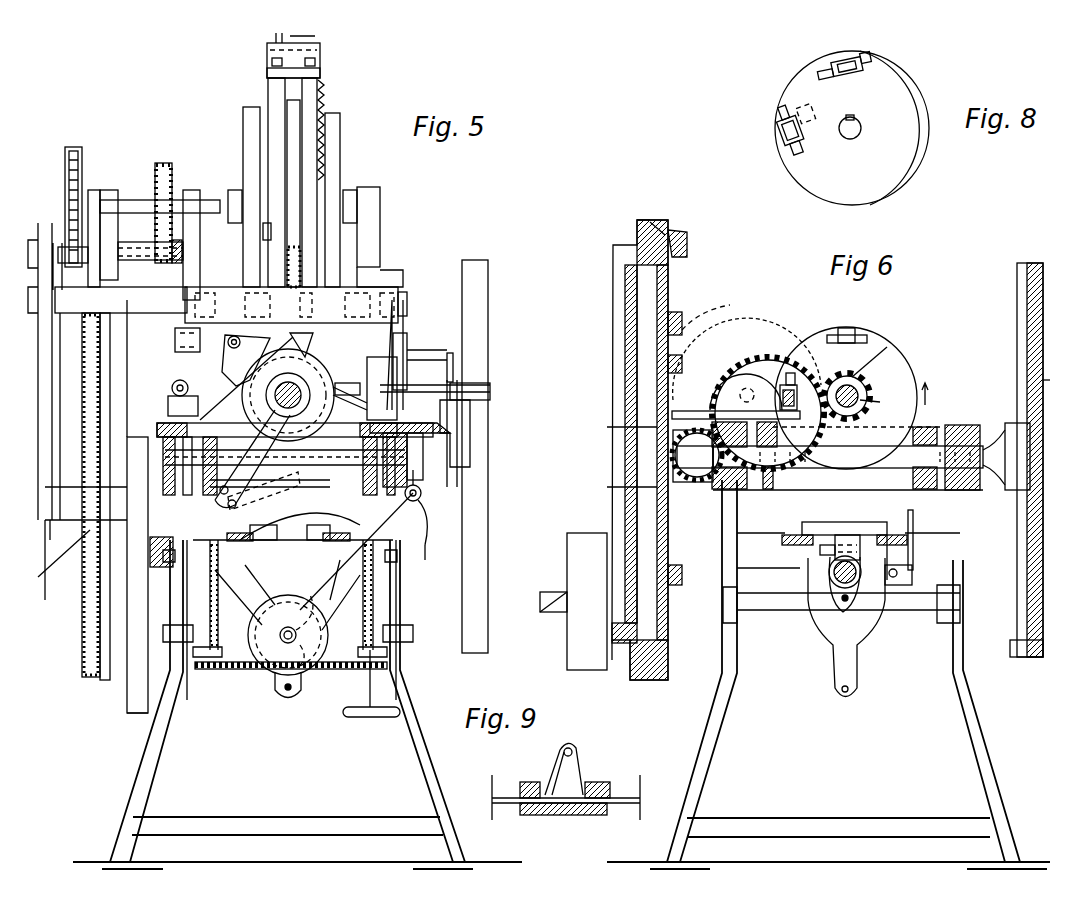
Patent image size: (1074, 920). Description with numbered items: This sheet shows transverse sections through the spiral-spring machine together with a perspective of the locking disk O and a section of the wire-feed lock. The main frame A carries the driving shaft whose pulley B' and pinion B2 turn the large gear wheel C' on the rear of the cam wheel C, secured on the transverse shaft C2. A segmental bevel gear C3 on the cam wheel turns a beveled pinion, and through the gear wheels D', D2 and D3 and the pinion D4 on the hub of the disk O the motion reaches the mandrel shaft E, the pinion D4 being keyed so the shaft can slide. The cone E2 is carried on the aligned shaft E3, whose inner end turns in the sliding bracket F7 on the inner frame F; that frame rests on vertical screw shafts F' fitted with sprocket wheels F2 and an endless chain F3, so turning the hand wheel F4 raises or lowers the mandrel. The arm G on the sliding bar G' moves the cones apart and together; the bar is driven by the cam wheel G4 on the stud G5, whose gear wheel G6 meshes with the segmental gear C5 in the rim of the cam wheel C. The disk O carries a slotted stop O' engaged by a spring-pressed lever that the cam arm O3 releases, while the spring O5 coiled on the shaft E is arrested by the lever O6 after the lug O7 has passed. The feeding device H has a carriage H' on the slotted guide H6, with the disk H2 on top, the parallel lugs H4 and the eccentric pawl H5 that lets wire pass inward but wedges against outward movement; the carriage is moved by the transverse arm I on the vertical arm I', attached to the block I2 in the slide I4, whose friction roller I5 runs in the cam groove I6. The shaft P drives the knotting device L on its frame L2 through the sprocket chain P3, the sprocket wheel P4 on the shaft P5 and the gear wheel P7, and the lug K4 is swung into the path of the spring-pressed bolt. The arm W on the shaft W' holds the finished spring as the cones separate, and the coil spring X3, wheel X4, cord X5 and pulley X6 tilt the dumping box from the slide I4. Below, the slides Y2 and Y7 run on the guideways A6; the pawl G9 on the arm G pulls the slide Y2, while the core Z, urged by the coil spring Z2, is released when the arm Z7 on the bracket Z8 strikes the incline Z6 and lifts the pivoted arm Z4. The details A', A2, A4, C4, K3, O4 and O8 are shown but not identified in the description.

In FIG. 5, the main frame A is at (297, 704).
In FIG. 6, the main frame A is at (828, 674).
In FIG. 5, the frame bracket A' is at (151, 552).
In FIG. 5, the frame bracket A2 is at (415, 422).
In FIG. 5, the frame guide A4 is at (244, 595).
In FIG. 5, the guideways A6 is at (292, 533).
In FIG. 6, the guideways A6 is at (882, 538).
In FIG. 6, the pulley B' is at (546, 603).
In FIG. 6, the pinion B2 is at (571, 601).
In FIG. 5, the cam wheel C is at (79, 355).
In FIG. 6, the cam wheel C is at (626, 450).
In FIG. 5, the large gear wheel C' is at (52, 569).
In FIG. 6, the large gear wheel C' is at (775, 535).
In FIG. 5, the shaft C2 is at (284, 466).
In FIG. 6, the shaft C2 is at (905, 460).
In FIG. 5, the segmental bevel gear wheel C3 is at (82, 420).
In FIG. 6, the segmental bevel gear wheel C3 is at (690, 243).
In FIG. 6, the carriage lug C4 is at (668, 222).
In FIG. 5, the segmental gear wheel C5 is at (100, 425).
In FIG. 6, the segmental gear wheel C5 is at (655, 220).
In FIG. 6, the gear wheel D' is at (694, 474).
In FIG. 6, the gear wheel D2 is at (748, 421).
In FIG. 6, the gear wheel D3 is at (745, 322).
In FIG. 6, the pinion D4 is at (889, 351).
In FIG. 6, the mandrel shaft E is at (868, 392).
In FIG. 5, the spring-forming cone E2 is at (295, 434).
In FIG. 5, the shaft E3 is at (347, 374).
In FIG. 6, the frame F is at (938, 399).
In FIG. 5, the screw shafts F' is at (270, 540).
In FIG. 5, the sprocket wheels F2 is at (296, 680).
In FIG. 5, the sprocket chain F3 is at (248, 665).
In FIG. 5, the hand wheel F4 is at (372, 717).
In FIG. 5, the bracket F7 is at (350, 390).
In FIG. 5, the arm G is at (252, 459).
In FIG. 5, the bar G' is at (146, 575).
In FIG. 5, the cam wheel G4 is at (130, 705).
In FIG. 5, the stud G5 is at (85, 530).
In FIG. 5, the gear wheel G6 is at (57, 558).
In FIG. 5, the pawl G9 is at (285, 492).
In FIG. 5, the feeding device H is at (481, 456).
In FIG. 5, the feed carriage H' is at (395, 376).
In FIG. 9, the disk H2 is at (566, 802).
In FIG. 5, the lugs H4 is at (405, 335).
In FIG. 9, the lugs H4 is at (590, 782).
In FIG. 9, the eccentric pawl H5 is at (555, 772).
In FIG. 5, the guide H6 is at (433, 361).
In FIG. 5, the transverse arm I is at (435, 424).
In FIG. 5, the vertical arm I' is at (443, 443).
In FIG. 5, the block I2 is at (426, 486).
In FIG. 5, the slide I4 is at (430, 522).
In FIG. 6, the friction roller I5 is at (1054, 380).
In FIG. 6, the cam groove I6 is at (1017, 283).
In FIG. 5, the block K3 is at (175, 345).
In FIG. 5, the lug K4 is at (235, 385).
In FIG. 5, the knotting device L is at (306, 160).
In FIG. 5, the frame L2 is at (372, 290).
In FIG. 6, the disk O is at (846, 392).
In FIG. 8, the disk O is at (861, 128).
In FIG. 6, the slotted stop O' is at (798, 391).
In FIG. 8, the slotted stop O' is at (790, 127).
In FIG. 6, the cam arm O3 is at (684, 332).
In FIG. 6, the pawl O4 is at (848, 328).
In FIG. 8, the pawl O4 is at (832, 67).
In FIG. 6, the spring O5 is at (880, 405).
In FIG. 6, the lever O6 is at (736, 403).
In FIG. 6, the cam projection O7 is at (706, 317).
In FIG. 6, the stop O8 is at (690, 573).
In FIG. 5, the shaft P is at (231, 305).
In FIG. 5, the sprocket chain P3 is at (65, 182).
In FIG. 5, the sprocket wheel P4 is at (110, 200).
In FIG. 5, the shaft P5 is at (132, 200).
In FIG. 5, the gear wheel P7 is at (172, 180).
In FIG. 5, the arm W is at (295, 386).
In FIG. 5, the shaft W' is at (168, 398).
In FIG. 5, the coil spring X3 is at (288, 635).
In FIG. 5, the wheel X4 is at (302, 685).
In FIG. 5, the cord X5 is at (352, 551).
In FIG. 5, the pulley X6 is at (432, 542).
In FIG. 6, the slide Y2 is at (880, 640).
In FIG. 6, the slide Y7 is at (818, 522).
In FIG. 6, the core Z is at (829, 575).
In FIG. 6, the coil spring Z2 is at (830, 600).
In FIG. 6, the arm Z4 is at (820, 550).
In FIG. 6, the inclined arm Z6 is at (856, 600).
In FIG. 6, the arm Z7 is at (912, 575).
In FIG. 6, the bracket Z8 is at (919, 537).